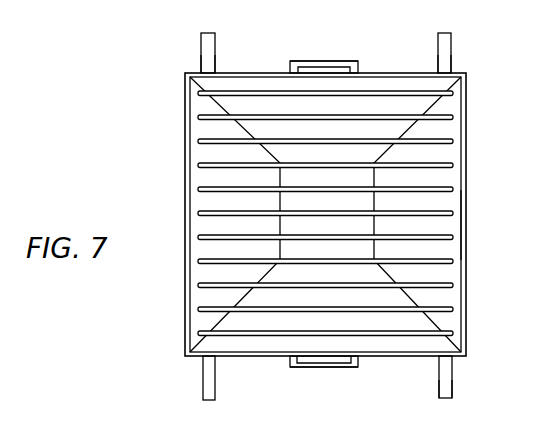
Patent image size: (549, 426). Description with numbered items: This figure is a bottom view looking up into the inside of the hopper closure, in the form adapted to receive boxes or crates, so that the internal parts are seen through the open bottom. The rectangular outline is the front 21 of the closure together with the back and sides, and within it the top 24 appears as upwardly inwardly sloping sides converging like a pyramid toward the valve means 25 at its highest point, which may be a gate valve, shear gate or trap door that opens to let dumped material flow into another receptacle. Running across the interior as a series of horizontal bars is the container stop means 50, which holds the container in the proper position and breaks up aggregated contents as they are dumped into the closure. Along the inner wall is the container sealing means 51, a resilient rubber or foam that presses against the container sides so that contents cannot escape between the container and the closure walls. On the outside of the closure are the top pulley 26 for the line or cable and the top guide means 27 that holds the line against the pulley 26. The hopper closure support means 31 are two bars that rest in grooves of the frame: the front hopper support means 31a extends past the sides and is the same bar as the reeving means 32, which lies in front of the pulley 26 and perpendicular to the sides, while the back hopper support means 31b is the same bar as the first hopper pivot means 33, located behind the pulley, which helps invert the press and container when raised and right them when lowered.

The front 21 is at (185, 168).
The top 24 is at (273, 325).
The valve means 25 is at (340, 175).
The top pulley 26 is at (325, 62).
The top guide means 27 is at (297, 62).
The hopper closure support means 31 is at (452, 390).
The front hopper support means 31a is at (198, 62).
The back hopper support means 31b is at (452, 55).
The reeving means 32 is at (200, 42).
The first hopper pivot means 33 is at (451, 33).
The container stop means 50 is at (437, 208).
The container sealing means 51 is at (458, 223).